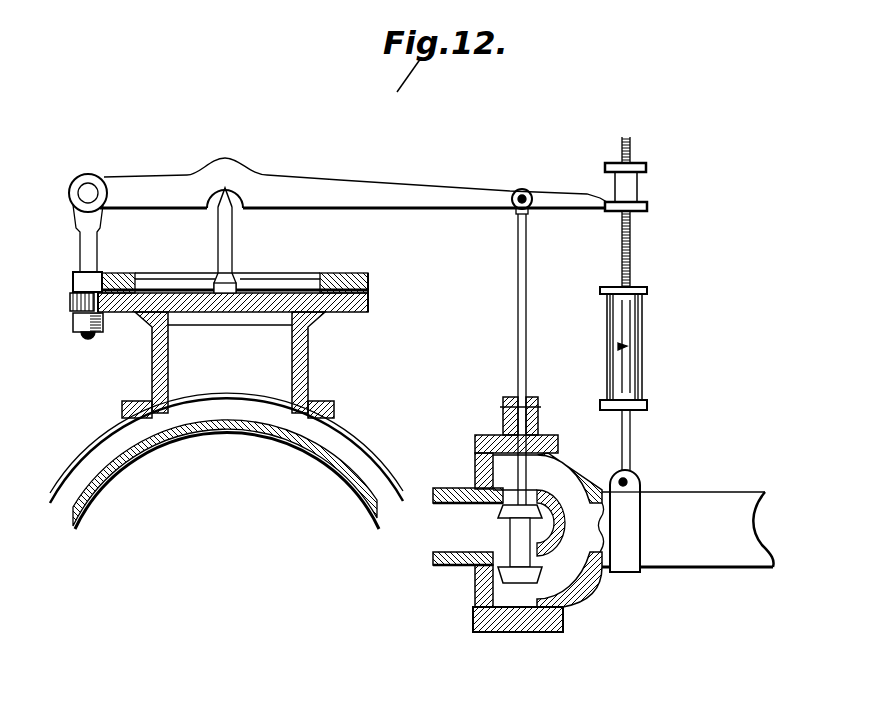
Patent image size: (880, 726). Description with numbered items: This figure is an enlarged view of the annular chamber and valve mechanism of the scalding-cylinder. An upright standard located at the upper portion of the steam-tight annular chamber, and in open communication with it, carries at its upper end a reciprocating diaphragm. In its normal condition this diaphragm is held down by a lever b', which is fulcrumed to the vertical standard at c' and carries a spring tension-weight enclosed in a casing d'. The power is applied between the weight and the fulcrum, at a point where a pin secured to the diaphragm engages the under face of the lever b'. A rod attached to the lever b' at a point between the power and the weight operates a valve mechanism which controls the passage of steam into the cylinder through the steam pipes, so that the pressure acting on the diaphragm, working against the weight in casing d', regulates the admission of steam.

The lever b' is at (373, 182).
The fulcrum c' is at (88, 246).
The casing d' is at (632, 354).